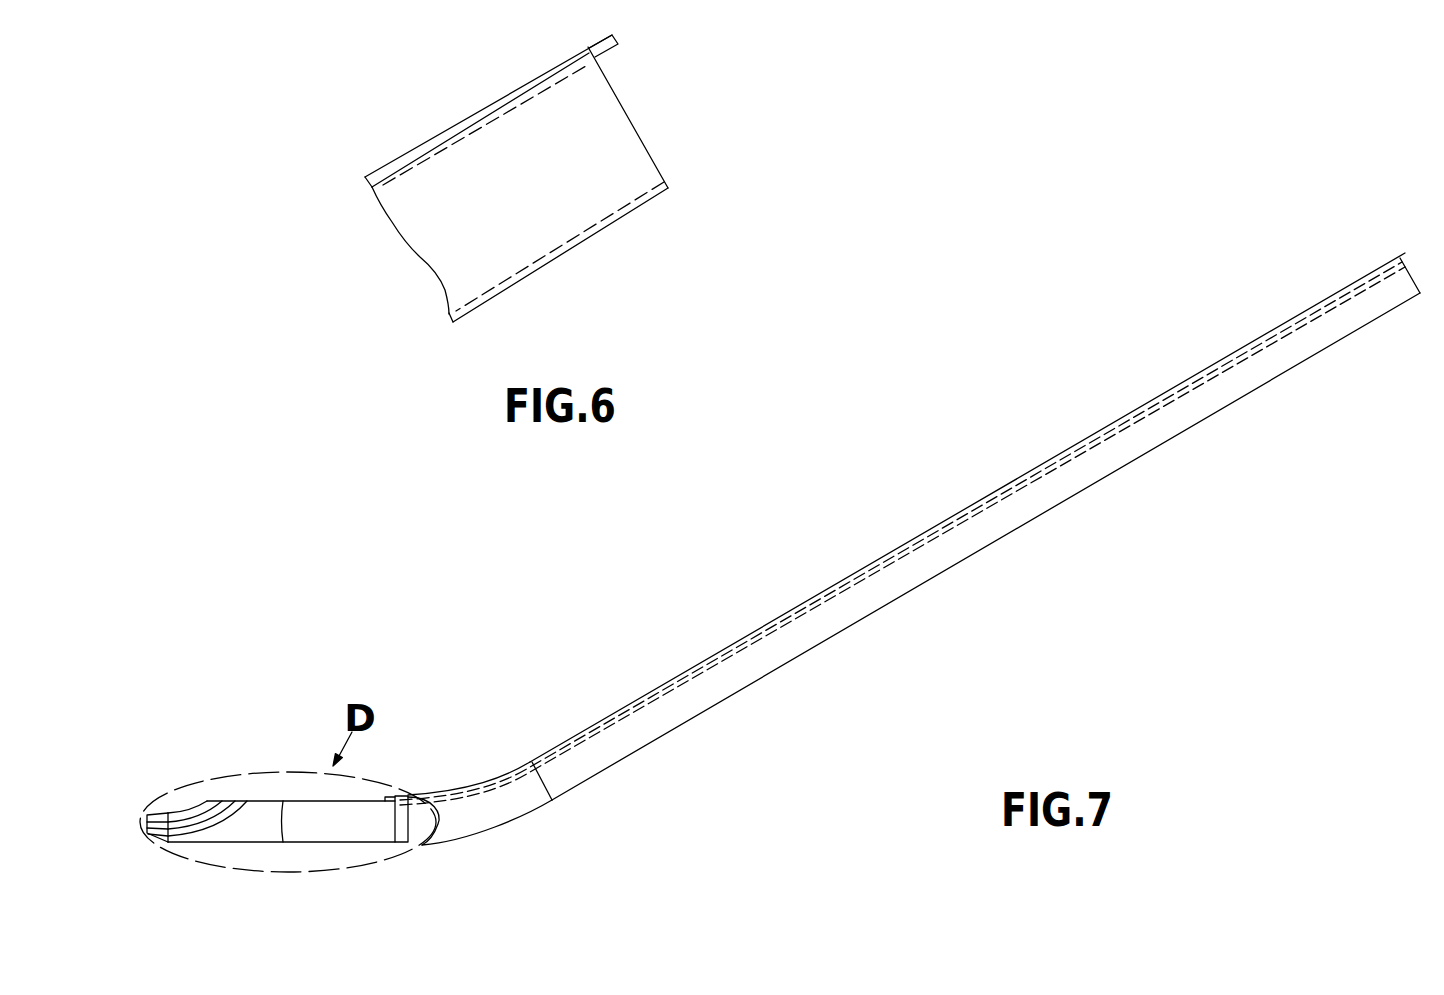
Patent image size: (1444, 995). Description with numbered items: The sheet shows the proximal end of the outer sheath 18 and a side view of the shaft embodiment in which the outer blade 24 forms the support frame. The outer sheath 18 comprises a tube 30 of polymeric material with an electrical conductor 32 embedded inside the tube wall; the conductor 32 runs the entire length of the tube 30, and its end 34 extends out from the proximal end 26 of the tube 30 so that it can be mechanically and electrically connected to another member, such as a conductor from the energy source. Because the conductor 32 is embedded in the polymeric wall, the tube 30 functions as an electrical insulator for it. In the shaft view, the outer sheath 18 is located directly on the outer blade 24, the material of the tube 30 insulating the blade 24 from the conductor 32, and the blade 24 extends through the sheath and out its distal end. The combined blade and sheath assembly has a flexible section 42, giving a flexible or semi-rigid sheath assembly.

In FIG. 6, the outer sheath 18 is at (630, 216).
In FIG. 7, the outer sheath 18 is at (883, 609).
In FIG. 7, the outer blade 24 is at (190, 810).
In FIG. 7, the proximal end 26 is at (1402, 297).
In FIG. 6, the tube 30 is at (605, 108).
In FIG. 7, the tube 30 is at (1022, 529).
In FIG. 6, the electrical conductor 32 is at (518, 89).
In FIG. 6, the end of the electrical conductor 34 is at (602, 40).
In FIG. 7, the flexible section 42 is at (480, 838).